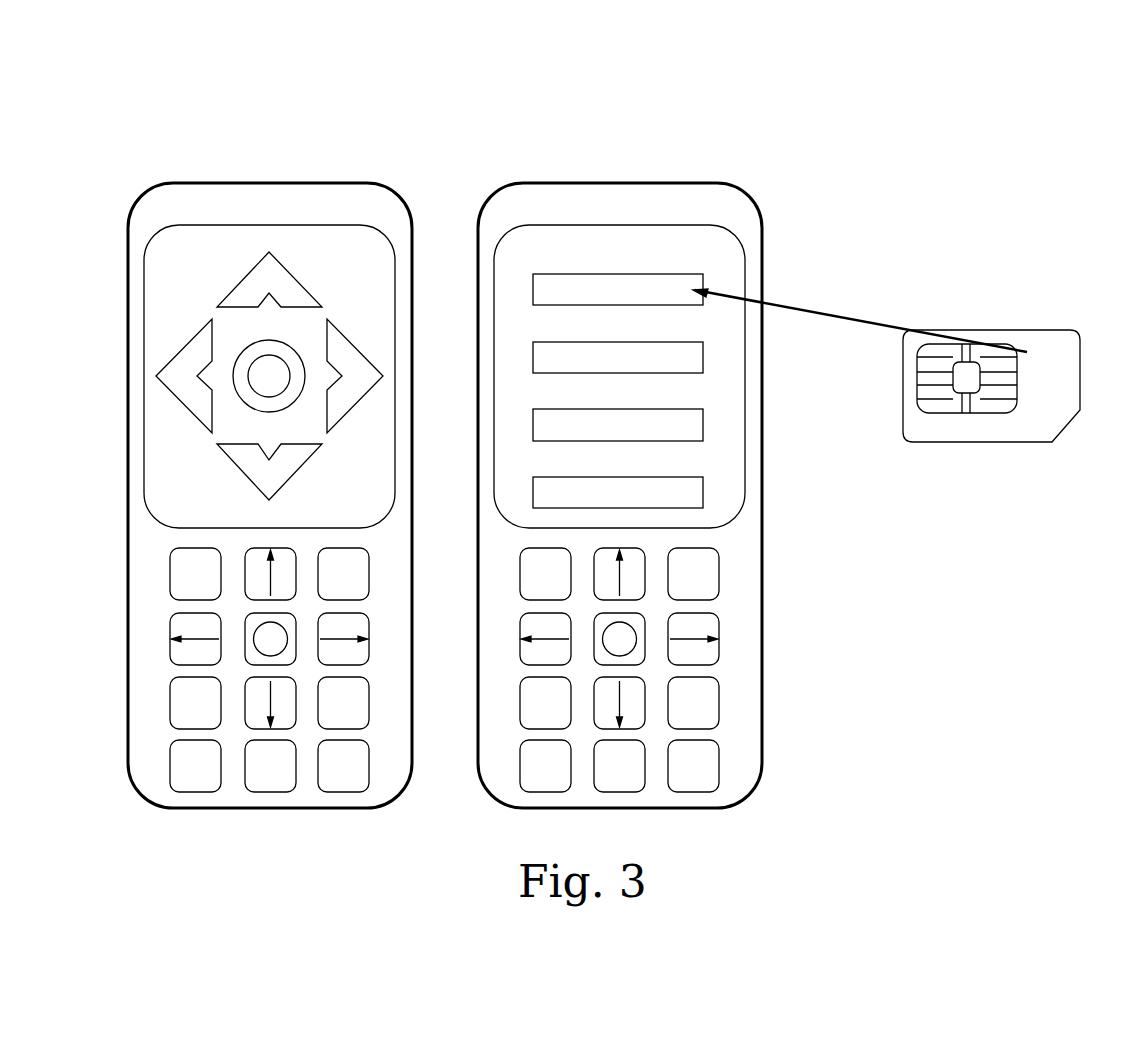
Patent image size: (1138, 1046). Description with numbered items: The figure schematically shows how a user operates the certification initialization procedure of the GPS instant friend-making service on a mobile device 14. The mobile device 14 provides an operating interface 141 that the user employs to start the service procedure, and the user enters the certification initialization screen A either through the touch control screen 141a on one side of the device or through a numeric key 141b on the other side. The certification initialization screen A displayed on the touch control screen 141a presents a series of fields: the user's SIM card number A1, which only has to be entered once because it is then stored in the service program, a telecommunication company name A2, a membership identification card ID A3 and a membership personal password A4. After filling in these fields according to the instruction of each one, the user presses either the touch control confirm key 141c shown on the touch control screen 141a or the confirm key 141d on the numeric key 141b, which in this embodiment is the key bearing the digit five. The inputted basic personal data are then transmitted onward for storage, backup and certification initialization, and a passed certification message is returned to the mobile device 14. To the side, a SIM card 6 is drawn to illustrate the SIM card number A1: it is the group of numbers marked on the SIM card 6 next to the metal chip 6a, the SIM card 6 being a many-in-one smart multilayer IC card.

The mobile device 14 is at (455, 118).
The operating interface 141 is at (250, 183).
The touch control screen 141a is at (327, 225).
The numeric key 141b is at (720, 573).
The touch control confirm key 141c is at (250, 353).
The confirm key 141d is at (637, 640).
The certification initialization screen A is at (668, 235).
The SIM card number A1 is at (688, 260).
The telecommunication company name A2 is at (708, 330).
The membership identification card ID A3 is at (708, 397).
The membership personal password A4 is at (708, 465).
The SIM card 6 is at (975, 330).
The metal chip 6a is at (945, 413).